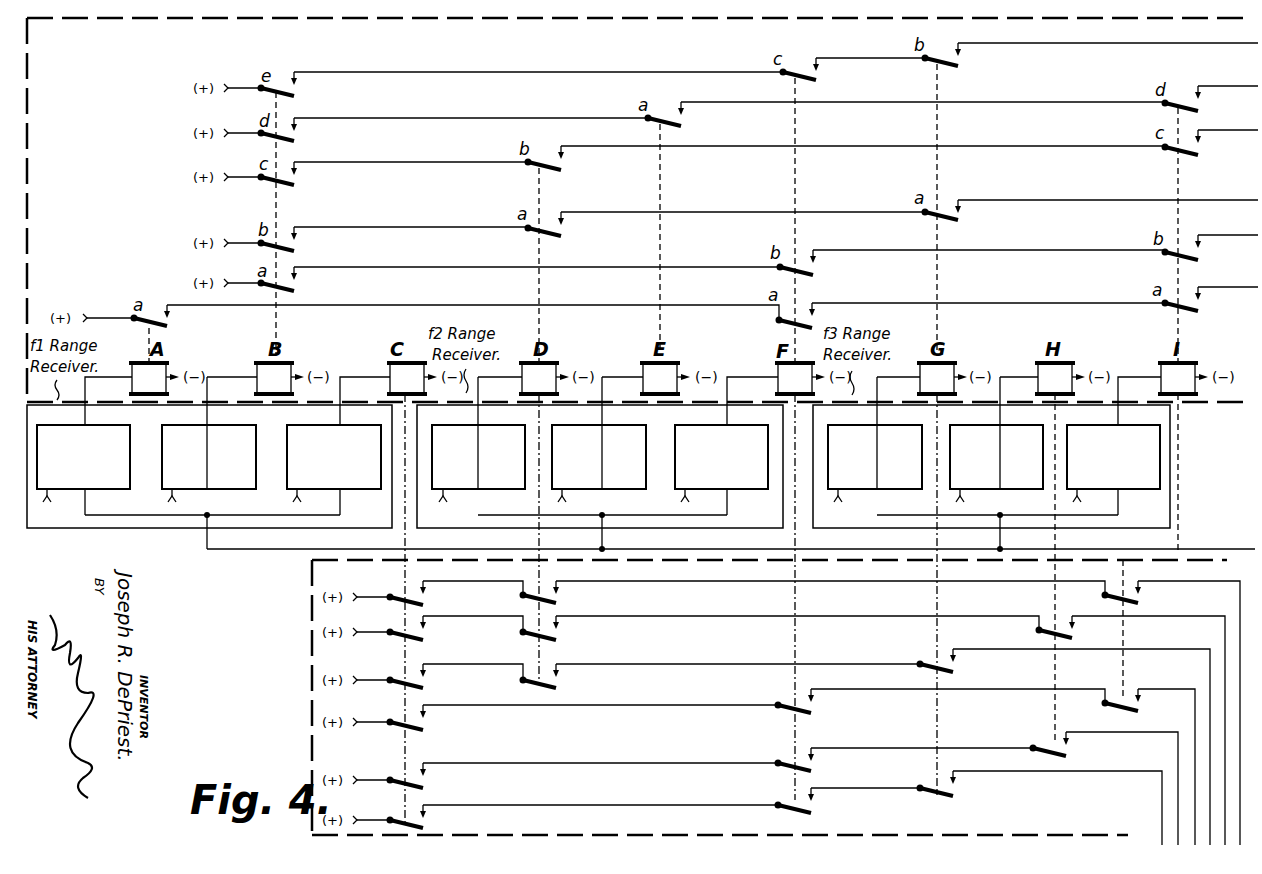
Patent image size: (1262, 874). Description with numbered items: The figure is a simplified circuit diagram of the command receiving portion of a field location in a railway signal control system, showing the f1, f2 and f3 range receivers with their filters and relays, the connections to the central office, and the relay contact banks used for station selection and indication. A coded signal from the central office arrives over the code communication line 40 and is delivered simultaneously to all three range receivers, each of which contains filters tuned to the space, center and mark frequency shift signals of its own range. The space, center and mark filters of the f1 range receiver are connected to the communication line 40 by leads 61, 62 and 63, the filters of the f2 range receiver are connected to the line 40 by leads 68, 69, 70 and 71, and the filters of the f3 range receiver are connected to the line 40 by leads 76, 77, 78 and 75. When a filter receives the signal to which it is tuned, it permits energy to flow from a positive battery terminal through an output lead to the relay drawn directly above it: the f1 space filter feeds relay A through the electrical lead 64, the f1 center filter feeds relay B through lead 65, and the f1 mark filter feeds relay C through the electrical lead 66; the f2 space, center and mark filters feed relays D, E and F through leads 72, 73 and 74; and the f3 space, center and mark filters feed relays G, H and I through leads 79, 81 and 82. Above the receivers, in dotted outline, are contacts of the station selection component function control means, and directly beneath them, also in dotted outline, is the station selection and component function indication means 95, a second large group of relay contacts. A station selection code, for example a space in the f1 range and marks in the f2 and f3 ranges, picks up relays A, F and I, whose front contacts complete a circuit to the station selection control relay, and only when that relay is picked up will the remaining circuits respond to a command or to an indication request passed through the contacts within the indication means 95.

The code communication line 40 is at (1220, 550).
The lead 61 is at (133, 511).
The lead 62 is at (212, 513).
The lead 63 is at (342, 513).
The electrical lead 64 is at (108, 401).
The conductor from f1 center filter to relay B 65 is at (232, 366).
The electrical lead 66 is at (366, 366).
The lead 68 is at (520, 511).
The lead 69 is at (599, 473).
The lead 70 is at (605, 545).
The lead 71 is at (729, 513).
The lead 72 is at (486, 385).
The lead 73 is at (623, 366).
The electrical lead 74 is at (750, 366).
The lead 75 is at (1003, 545).
The lead 76 is at (914, 511).
The lead 77 is at (996, 473).
The lead 78 is at (1120, 513).
The electrical lead 79 is at (878, 392).
The electrical lead 81 is at (1018, 366).
The electrical lead 82 is at (1142, 366).
The station selection and component function indication means 95 is at (312, 697).